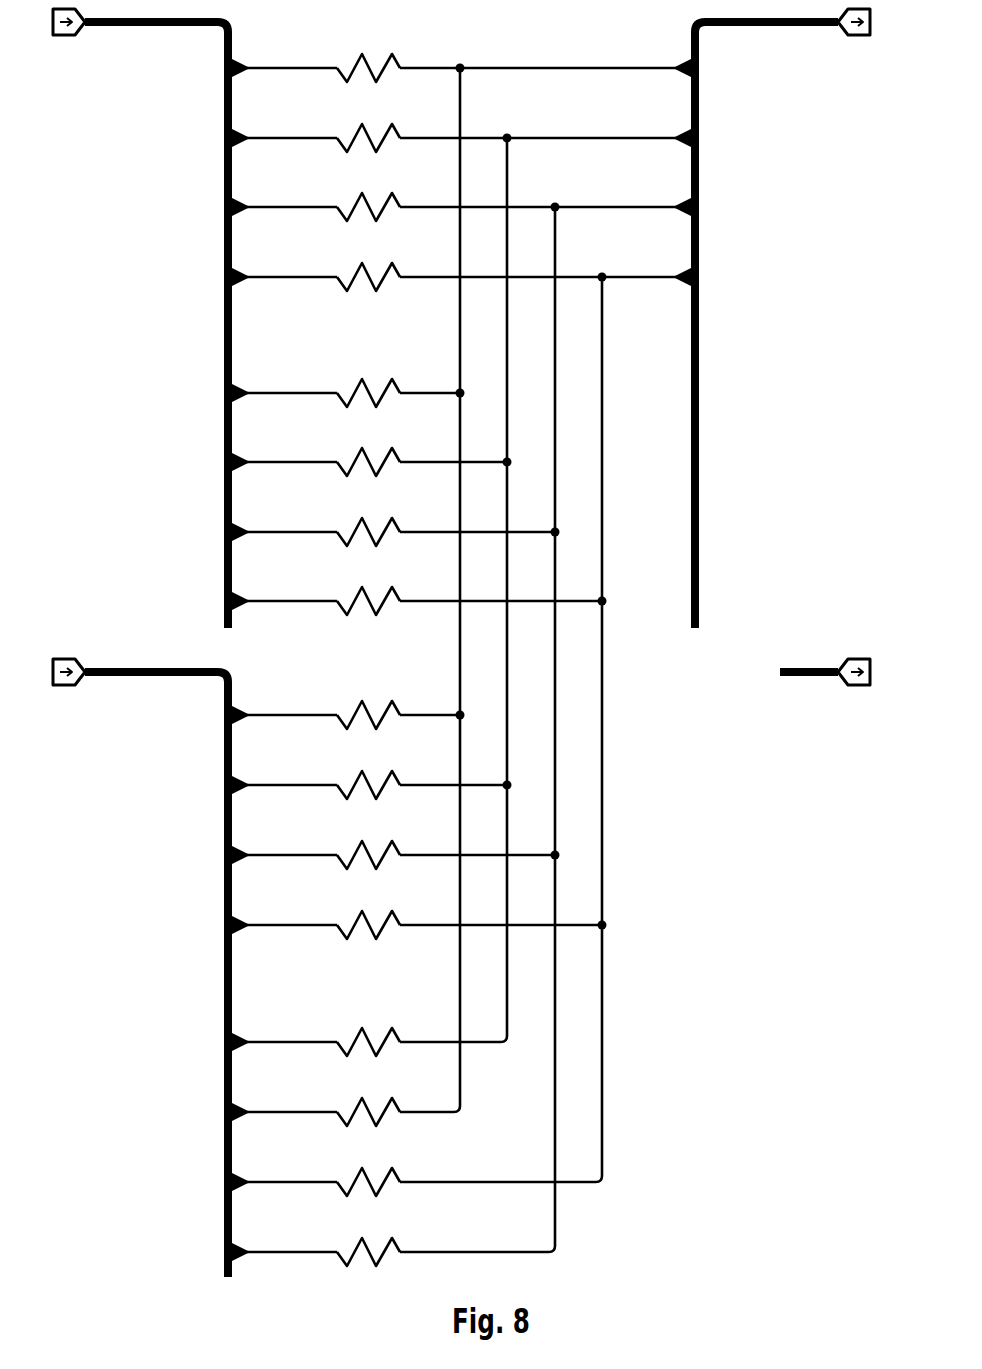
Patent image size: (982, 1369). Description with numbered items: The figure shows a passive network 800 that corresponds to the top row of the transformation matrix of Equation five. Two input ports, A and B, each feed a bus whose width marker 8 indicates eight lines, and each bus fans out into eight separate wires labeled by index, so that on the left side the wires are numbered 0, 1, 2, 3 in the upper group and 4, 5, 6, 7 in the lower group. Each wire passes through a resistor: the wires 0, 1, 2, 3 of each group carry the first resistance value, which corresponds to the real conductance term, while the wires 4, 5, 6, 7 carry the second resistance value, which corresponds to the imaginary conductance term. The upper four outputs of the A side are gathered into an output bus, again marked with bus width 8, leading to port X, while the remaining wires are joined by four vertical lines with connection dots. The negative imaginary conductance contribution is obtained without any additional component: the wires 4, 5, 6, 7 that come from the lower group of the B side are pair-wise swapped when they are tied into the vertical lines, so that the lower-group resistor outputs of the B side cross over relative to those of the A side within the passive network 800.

The passive network 800 is at (459, 639).
The 8-bit bus 8 is at (459, 639).
The resistor branch 0 is at (465, 384).
The resistor branch 1 is at (465, 454).
The resistor branch 2 is at (465, 523).
The resistor branch 3 is at (465, 593).
The wire 4 is at (372, 710).
The wire 5 is at (372, 779).
The wire 6 is at (419, 849).
The wire 7 is at (419, 919).